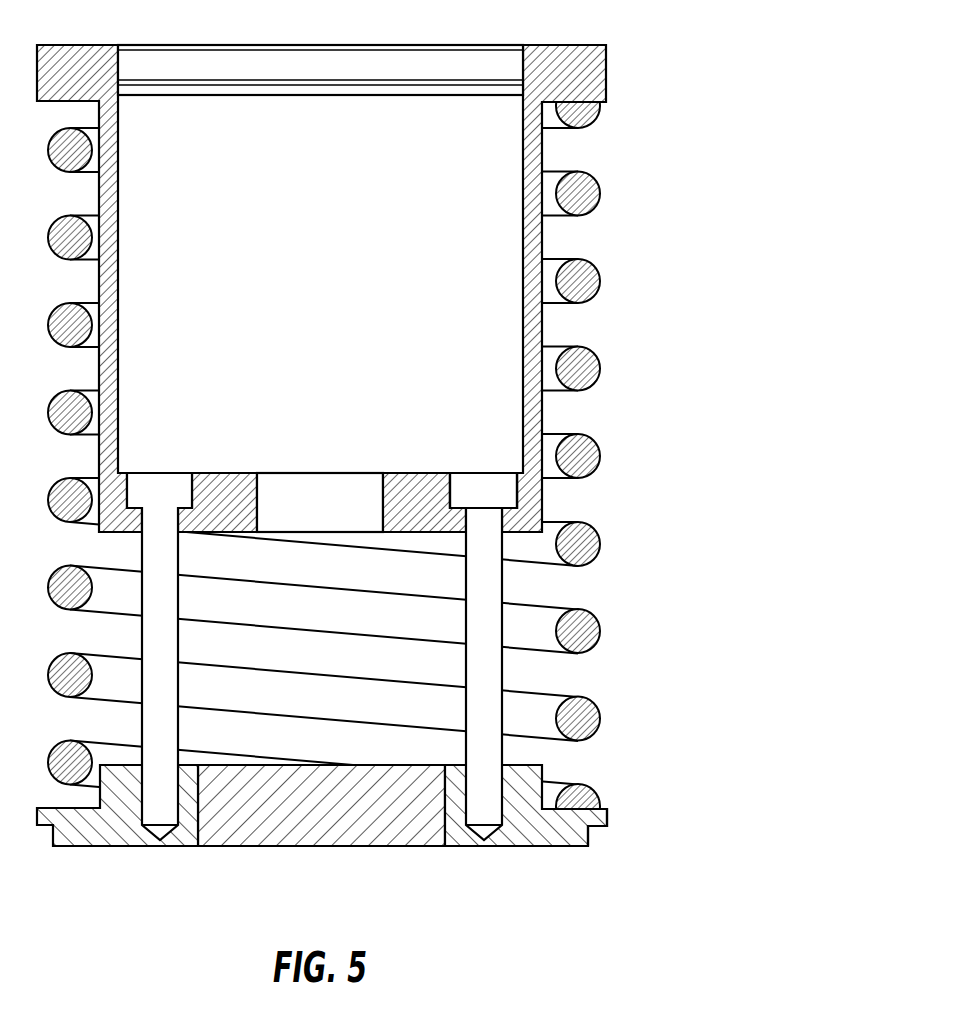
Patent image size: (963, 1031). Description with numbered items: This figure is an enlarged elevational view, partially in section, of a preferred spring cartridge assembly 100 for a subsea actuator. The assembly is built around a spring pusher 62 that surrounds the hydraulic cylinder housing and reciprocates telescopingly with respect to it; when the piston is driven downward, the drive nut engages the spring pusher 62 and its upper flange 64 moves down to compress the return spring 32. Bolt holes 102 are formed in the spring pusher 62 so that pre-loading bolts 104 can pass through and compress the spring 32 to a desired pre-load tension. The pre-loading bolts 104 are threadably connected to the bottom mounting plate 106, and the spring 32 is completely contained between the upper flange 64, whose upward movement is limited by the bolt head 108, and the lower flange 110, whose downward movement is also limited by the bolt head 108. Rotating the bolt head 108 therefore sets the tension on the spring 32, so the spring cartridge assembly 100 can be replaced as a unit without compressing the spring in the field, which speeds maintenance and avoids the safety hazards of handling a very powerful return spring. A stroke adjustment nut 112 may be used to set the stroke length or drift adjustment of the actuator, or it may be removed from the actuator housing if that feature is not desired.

The return spring 32 is at (588, 188).
The spring pusher 62 is at (543, 325).
The upper flange 64 is at (590, 70).
The spring cartridge assembly 100 is at (722, 308).
The bolt holes 102 is at (460, 478).
The pre-loading bolts 104 is at (488, 657).
The bottom mounting plate 106 is at (522, 822).
The bolt head 108 is at (503, 492).
The lower flange 110 is at (567, 832).
The stroke adjustment nut 112 is at (351, 822).